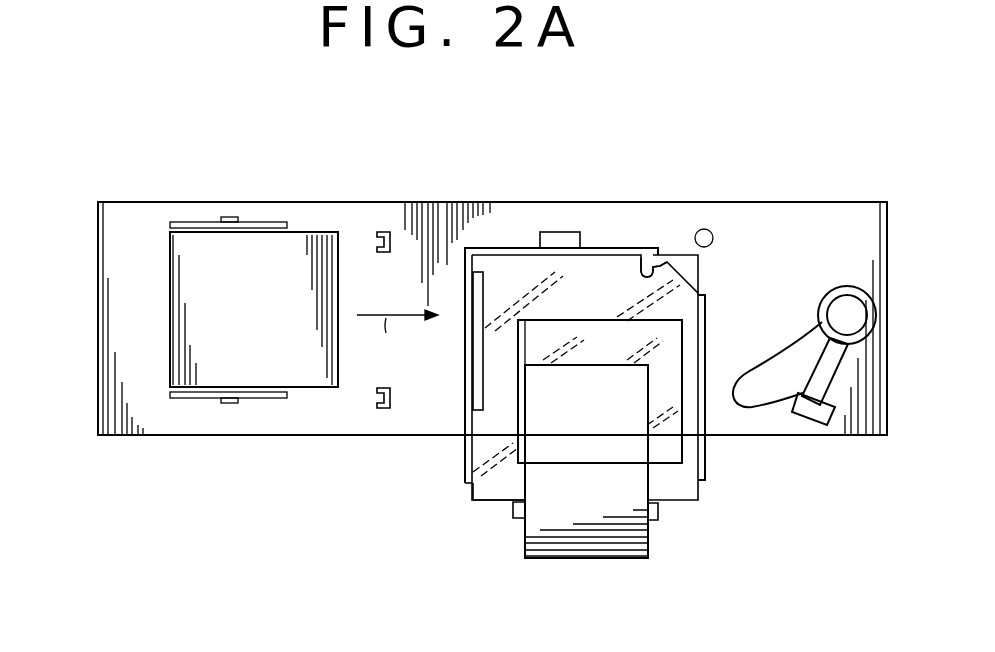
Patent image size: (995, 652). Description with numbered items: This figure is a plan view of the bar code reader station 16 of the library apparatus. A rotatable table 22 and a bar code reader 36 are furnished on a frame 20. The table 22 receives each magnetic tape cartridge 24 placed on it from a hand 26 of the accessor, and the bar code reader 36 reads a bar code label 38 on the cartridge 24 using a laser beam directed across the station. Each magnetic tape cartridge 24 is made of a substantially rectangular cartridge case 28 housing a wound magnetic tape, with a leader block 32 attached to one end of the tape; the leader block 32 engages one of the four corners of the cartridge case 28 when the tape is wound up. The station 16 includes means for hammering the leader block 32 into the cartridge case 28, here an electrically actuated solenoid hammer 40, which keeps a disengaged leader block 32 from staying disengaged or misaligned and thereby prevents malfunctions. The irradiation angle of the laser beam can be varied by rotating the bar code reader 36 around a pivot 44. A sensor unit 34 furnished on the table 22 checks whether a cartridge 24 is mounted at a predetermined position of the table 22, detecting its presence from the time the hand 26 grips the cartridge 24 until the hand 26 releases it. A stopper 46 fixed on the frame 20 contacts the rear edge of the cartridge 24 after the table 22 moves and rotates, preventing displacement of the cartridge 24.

The bar code reader station 16 is at (276, 185).
The frame 20 is at (806, 213).
The rotatable table 22 is at (590, 245).
The magnetic tape cartridge 24 is at (686, 506).
The hand 26 is at (573, 545).
The cartridge case 28 is at (487, 492).
The leader block 32 is at (660, 265).
The sensor unit 34 is at (545, 232).
The bar code reader 36 is at (203, 315).
The bar code label 38 is at (478, 388).
The solenoid hammer 40 is at (817, 416).
The pivot 44 is at (225, 402).
The stopper 46 is at (382, 231).